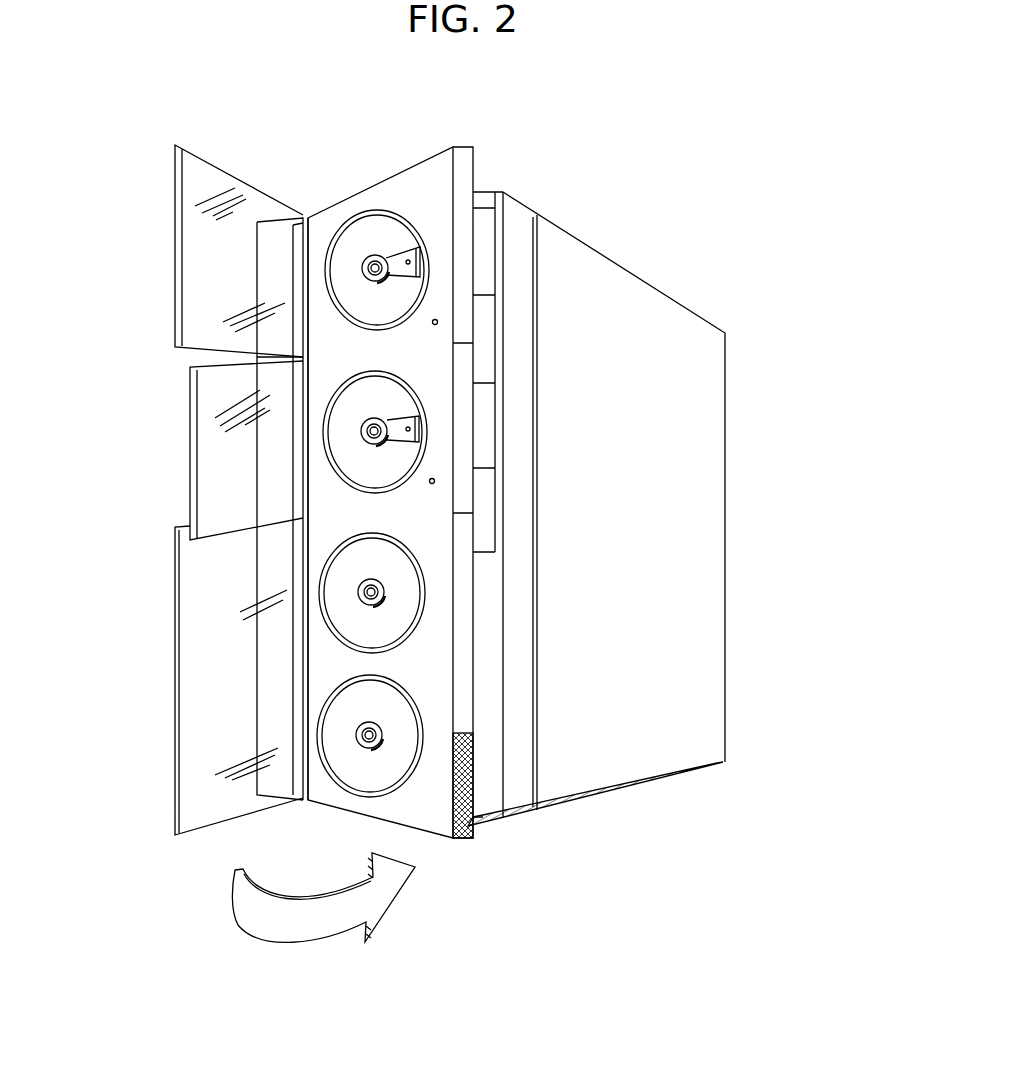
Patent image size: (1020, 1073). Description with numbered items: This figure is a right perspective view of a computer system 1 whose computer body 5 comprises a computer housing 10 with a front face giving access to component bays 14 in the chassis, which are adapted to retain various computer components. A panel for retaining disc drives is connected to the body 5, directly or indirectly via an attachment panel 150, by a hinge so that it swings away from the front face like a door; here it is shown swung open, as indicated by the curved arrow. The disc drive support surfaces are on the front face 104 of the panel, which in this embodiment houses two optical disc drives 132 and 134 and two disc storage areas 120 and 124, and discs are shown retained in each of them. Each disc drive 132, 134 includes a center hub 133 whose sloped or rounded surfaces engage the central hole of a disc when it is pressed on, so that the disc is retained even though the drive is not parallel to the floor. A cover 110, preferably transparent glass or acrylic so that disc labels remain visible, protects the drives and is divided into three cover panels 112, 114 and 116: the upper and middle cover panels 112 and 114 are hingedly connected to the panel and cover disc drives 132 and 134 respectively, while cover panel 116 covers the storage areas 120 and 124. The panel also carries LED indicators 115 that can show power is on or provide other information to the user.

The computer system 1 is at (846, 429).
The computer body 5 is at (727, 513).
The computer housing 10 is at (725, 402).
The component bays 14 is at (483, 275).
The front face of the panel 104 is at (440, 747).
The cover 110 is at (166, 753).
The upper cover panel 112 is at (173, 210).
The middle cover panel 114 is at (190, 428).
The LED indicators 115 is at (438, 322).
The cover panel 116 is at (173, 623).
The storage area 120 is at (420, 570).
The storage area 124 is at (440, 700).
The optical disc drive 132 is at (372, 223).
The center hub 133 is at (423, 237).
The optical disc drive 134 is at (408, 378).
The attachment panel 150 is at (303, 358).